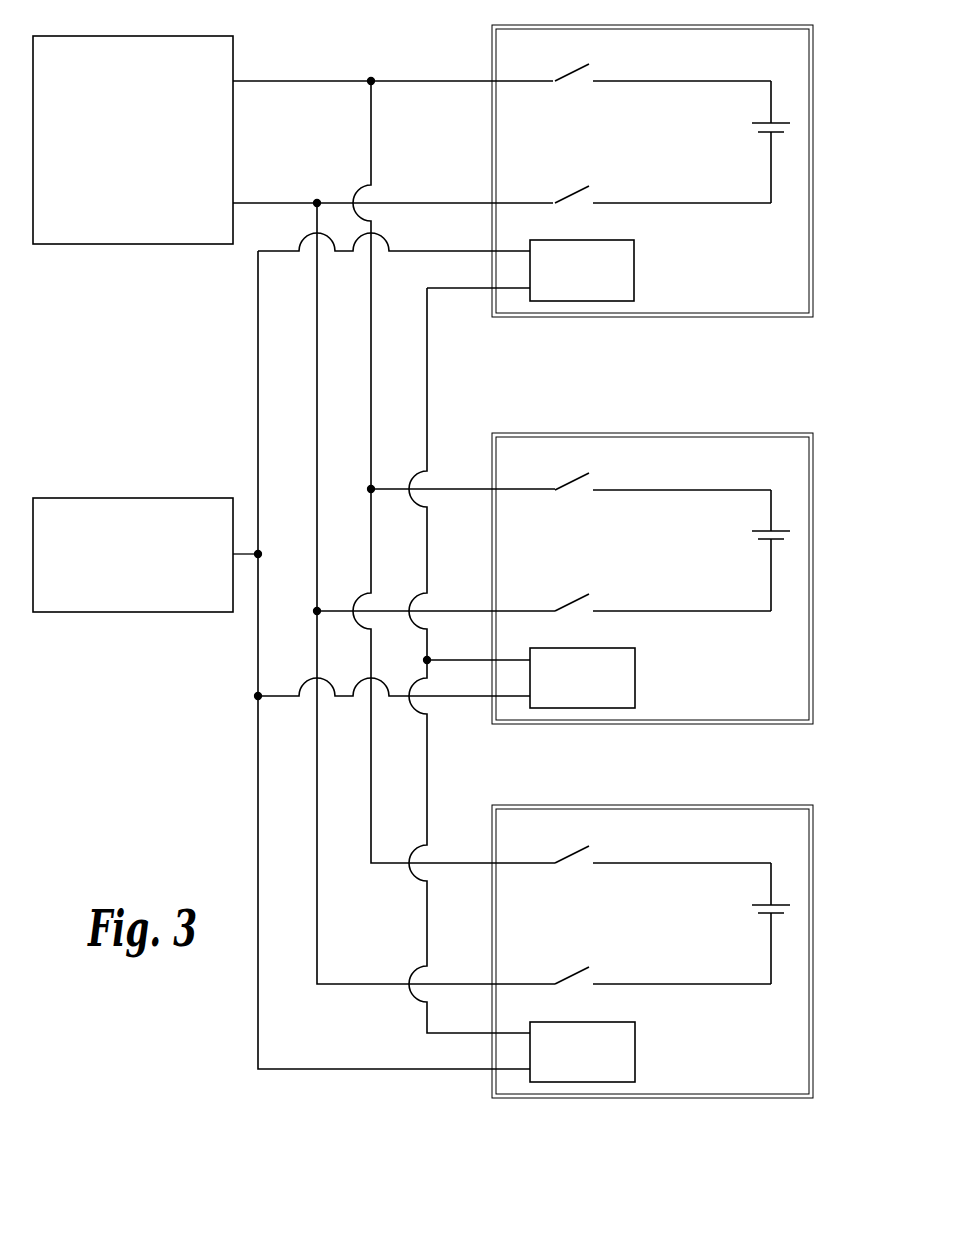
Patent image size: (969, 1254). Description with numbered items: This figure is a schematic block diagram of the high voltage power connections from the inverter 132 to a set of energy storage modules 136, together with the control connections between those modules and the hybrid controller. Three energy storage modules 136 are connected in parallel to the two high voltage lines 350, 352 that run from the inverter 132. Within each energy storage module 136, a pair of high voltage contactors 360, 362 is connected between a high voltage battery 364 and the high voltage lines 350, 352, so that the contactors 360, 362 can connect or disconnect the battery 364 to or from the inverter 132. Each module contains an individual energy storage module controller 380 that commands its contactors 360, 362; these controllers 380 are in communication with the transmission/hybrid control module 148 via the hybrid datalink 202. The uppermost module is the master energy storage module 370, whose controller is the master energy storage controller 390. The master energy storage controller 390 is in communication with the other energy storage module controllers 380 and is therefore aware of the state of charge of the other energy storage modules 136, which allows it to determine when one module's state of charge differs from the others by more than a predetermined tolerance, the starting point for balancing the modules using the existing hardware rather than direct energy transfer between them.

The inverter 132 is at (97, 244).
The transmission/hybrid control module 148 is at (90, 498).
The hybrid datalink 202 is at (257, 372).
The high voltage line 350 is at (282, 81).
The high voltage line 352 is at (260, 203).
The high voltage contactor 360 is at (584, 88).
The high voltage contactor 362 is at (602, 189).
The high voltage battery 364 is at (759, 140).
The master energy storage module 370 is at (677, 317).
The energy storage module controller 380 is at (635, 258).
The master energy storage controller 390 is at (567, 240).
The energy storage module 136 is at (588, 317).